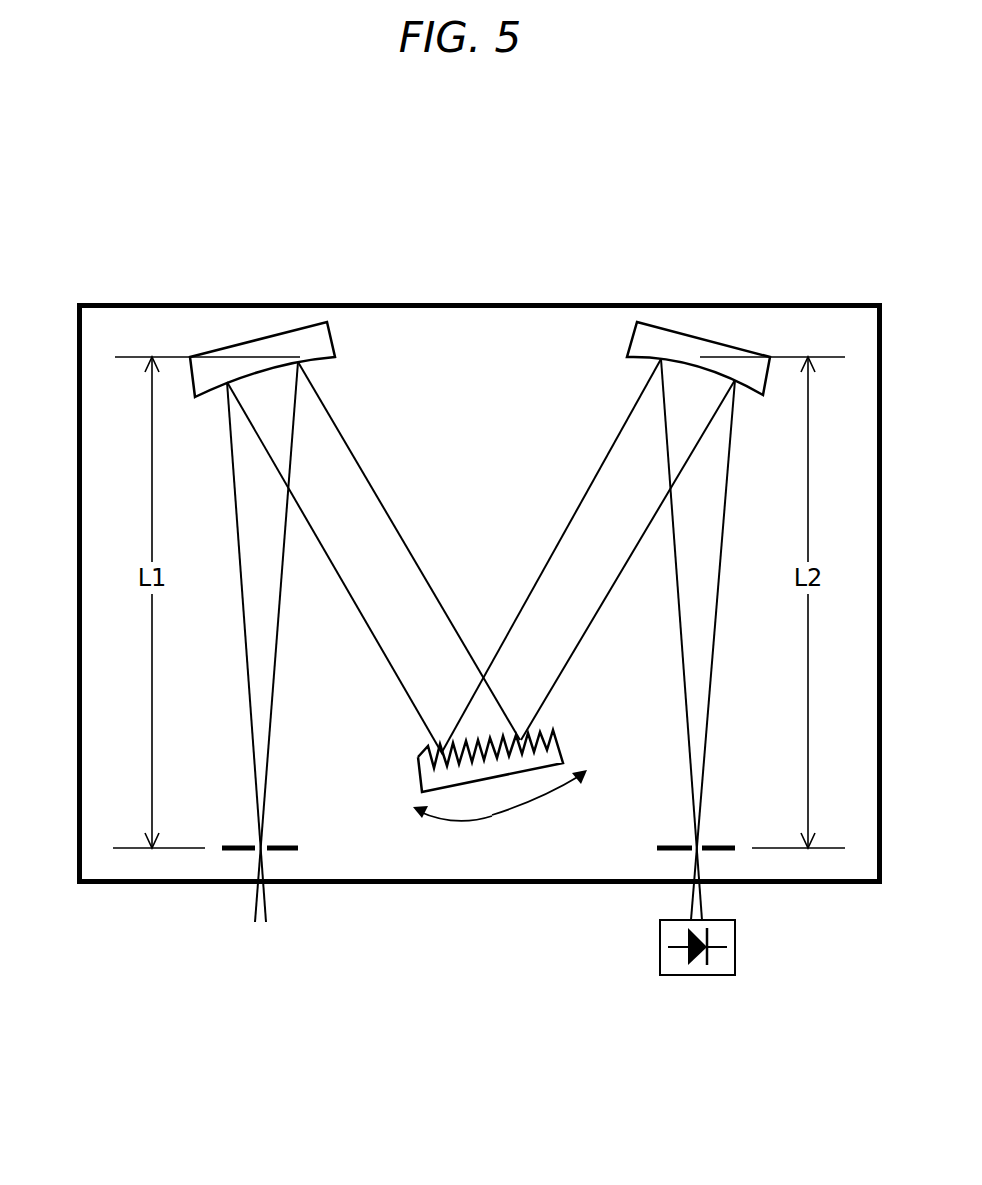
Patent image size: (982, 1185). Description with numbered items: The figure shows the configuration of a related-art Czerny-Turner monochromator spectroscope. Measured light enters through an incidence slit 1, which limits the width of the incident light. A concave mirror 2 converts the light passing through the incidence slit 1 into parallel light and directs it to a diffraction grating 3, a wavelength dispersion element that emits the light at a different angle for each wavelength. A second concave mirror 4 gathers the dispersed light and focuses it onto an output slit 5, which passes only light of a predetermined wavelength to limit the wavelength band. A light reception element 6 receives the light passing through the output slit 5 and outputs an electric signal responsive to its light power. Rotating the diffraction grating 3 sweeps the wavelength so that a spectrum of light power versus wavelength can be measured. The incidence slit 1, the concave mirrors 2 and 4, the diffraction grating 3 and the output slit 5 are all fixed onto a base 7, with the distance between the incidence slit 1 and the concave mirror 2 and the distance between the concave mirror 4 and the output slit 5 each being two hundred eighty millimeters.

The incidence slit 1 is at (277, 852).
The concave mirror 2 is at (261, 340).
The diffraction grating 3 is at (515, 775).
The concave mirror 4 is at (700, 338).
The output slit 5 is at (715, 850).
The light reception element 6 is at (702, 975).
The base 7 is at (482, 303).